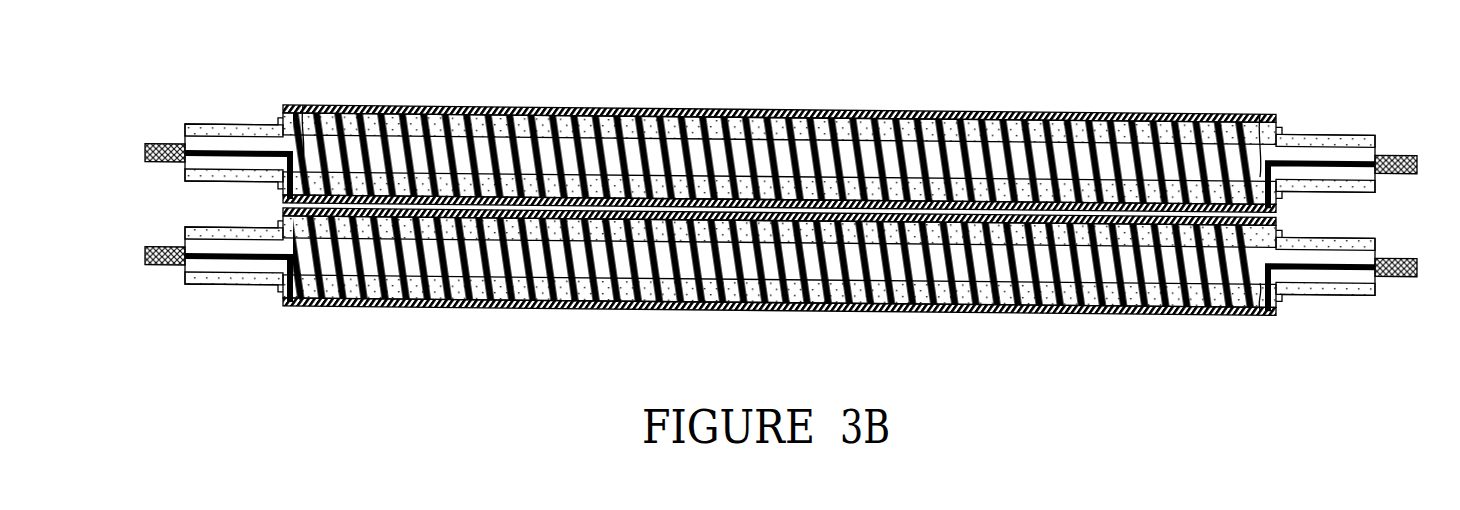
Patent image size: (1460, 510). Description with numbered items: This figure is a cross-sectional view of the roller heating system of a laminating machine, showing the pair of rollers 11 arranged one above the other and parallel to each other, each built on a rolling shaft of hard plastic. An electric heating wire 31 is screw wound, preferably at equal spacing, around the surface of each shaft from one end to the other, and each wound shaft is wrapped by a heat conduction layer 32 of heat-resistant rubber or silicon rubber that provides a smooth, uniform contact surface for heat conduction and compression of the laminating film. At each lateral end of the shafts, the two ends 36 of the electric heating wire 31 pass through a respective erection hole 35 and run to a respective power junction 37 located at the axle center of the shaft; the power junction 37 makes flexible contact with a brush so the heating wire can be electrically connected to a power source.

The pair of rollers 11 is at (698, 67).
The electric heating wire 31 is at (1102, 113).
The heat conduction layer 32 is at (913, 111).
The erection hole 35 is at (303, 105).
The ends of the electric heating wire 36 is at (240, 150).
The power junction 37 is at (154, 143).